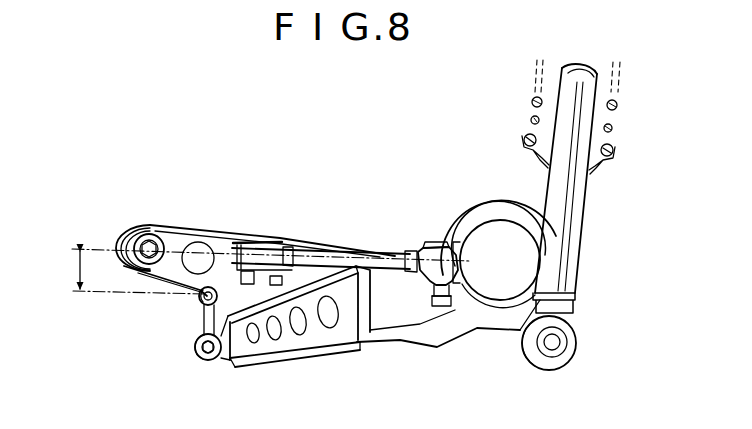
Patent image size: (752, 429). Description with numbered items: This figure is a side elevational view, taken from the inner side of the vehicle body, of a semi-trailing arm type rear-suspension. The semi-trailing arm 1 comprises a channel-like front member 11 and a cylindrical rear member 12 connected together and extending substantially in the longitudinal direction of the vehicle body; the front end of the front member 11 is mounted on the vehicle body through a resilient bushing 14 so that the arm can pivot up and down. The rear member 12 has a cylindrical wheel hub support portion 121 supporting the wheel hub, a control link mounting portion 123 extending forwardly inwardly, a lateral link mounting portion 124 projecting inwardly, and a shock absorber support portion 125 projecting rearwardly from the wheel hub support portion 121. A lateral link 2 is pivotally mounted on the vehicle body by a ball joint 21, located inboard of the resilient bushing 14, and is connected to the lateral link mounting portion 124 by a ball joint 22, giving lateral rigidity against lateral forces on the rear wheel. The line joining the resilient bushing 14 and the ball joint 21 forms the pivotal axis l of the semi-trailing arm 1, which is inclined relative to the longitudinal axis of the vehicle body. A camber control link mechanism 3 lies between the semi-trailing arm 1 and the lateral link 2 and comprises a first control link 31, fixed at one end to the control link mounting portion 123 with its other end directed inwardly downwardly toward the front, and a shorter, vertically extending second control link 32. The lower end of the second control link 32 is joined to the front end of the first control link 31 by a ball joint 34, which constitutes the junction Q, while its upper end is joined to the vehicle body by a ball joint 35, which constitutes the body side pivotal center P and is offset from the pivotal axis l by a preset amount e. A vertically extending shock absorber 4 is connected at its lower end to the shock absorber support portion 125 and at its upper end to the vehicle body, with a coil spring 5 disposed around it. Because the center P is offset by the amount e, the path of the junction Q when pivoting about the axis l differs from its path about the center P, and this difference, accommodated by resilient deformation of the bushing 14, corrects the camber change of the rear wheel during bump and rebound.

The semi-trailing arm 1 is at (442, 185).
The lateral link 2 is at (347, 251).
The camber control link mechanism 3 is at (258, 366).
The shock absorber 4 is at (577, 255).
The coil spring 5 is at (617, 127).
The front member 11 is at (223, 228).
The rear member 12 is at (473, 193).
The resilient bushing 14 is at (128, 223).
The ball joint 21 is at (254, 240).
The ball joint 22 is at (432, 246).
The first control link 31 is at (310, 355).
The second control link 32 is at (202, 315).
The ball joint 34 is at (198, 360).
The ball joint 35 is at (197, 297).
The wheel hub support portion 121 is at (505, 200).
The control link mounting portion 123 is at (422, 323).
The lateral link mounting portion 124 is at (447, 293).
The shock absorber support portion 125 is at (550, 352).
The body side pivotal center P is at (197, 243).
The junction Q is at (200, 342).
The pivotal axis l is at (258, 250).
The preset amount e is at (139, 272).